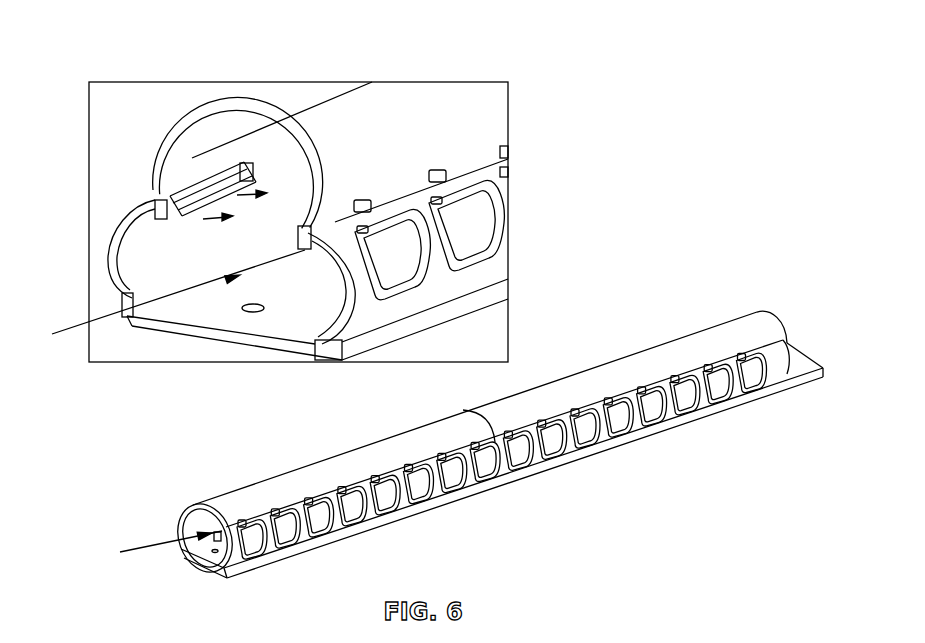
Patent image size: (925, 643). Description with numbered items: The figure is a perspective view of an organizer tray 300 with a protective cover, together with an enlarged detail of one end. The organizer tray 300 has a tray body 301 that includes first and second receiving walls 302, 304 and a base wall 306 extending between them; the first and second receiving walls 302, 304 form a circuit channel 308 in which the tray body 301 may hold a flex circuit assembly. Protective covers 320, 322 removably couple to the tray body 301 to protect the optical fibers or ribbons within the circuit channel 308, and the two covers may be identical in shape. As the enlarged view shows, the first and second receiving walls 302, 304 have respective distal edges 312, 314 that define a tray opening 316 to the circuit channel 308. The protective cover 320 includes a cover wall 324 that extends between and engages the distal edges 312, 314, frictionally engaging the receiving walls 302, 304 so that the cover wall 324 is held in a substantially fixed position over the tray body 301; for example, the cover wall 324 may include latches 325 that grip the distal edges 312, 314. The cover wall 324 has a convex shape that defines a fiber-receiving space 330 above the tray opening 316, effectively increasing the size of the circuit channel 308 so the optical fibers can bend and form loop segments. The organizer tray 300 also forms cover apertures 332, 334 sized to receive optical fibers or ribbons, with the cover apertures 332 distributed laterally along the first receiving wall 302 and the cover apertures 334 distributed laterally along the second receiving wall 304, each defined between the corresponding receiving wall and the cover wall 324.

The organizer tray 300 is at (697, 273).
The tray body 301 is at (226, 331).
The first receiving wall 302 is at (438, 233).
The second receiving wall 304 is at (108, 243).
The base wall 306 is at (197, 300).
The circuit channel 308 is at (156, 406).
The distal edge 312 is at (297, 241).
The distal edge 314 is at (170, 210).
The tray opening 316 is at (158, 193).
The protective cover 320 is at (343, 463).
The protective cover 322 is at (602, 372).
The cover wall 324 is at (433, 118).
The latches 325 is at (190, 184).
The fiber-receiving space 330 is at (230, 197).
The cover apertures 332 is at (363, 201).
The cover apertures 334 is at (240, 196).